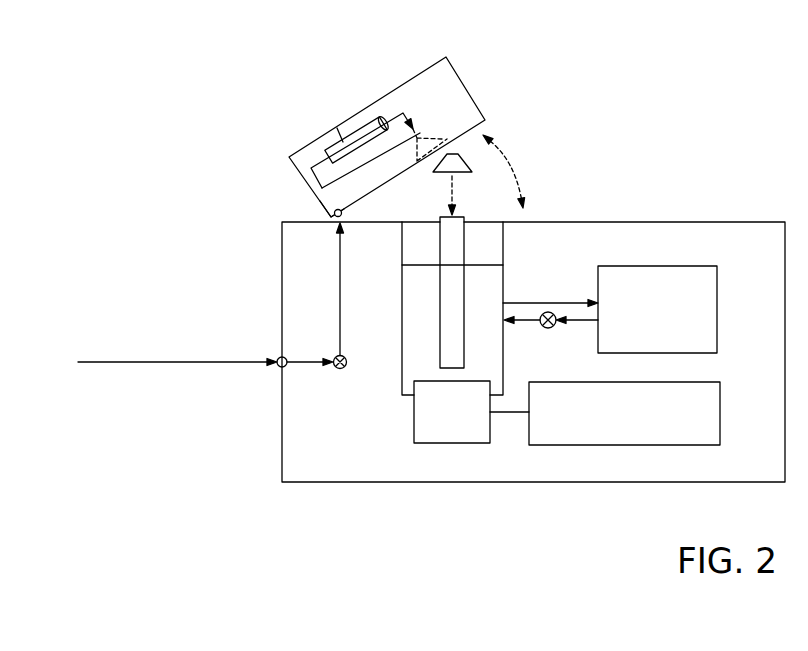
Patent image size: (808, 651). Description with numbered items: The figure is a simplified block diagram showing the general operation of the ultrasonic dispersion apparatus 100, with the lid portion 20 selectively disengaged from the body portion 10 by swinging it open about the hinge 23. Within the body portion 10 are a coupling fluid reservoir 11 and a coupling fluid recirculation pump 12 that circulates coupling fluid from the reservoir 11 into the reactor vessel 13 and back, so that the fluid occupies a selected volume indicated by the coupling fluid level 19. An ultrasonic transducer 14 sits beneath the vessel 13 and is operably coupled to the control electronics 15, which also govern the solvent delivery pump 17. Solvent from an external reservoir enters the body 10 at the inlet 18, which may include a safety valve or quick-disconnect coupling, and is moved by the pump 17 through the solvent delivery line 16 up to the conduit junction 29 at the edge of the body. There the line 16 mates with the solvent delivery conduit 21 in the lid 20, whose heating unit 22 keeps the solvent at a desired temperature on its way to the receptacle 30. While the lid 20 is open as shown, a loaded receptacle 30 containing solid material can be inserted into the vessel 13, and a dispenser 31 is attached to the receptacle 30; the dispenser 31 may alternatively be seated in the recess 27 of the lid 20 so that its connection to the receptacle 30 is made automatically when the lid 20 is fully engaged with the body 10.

The ultrasonic dispersion apparatus 100 is at (666, 128).
The body portion 10 is at (677, 222).
The coupling fluid reservoir 11 is at (718, 285).
The coupling fluid recirculation pump 12 is at (551, 328).
The reactor vessel 13 is at (402, 358).
The ultrasonic transducer 14 is at (413, 415).
The control electronics 15 is at (720, 393).
The solvent delivery line 16 is at (340, 318).
The solvent delivery pump 17 is at (334, 369).
The inlet 18 is at (278, 367).
The coupling fluid level 19 is at (402, 265).
The lid portion 20 is at (474, 90).
The solvent delivery conduit 21 is at (322, 186).
The heating unit 22 is at (336, 129).
The hinge 23 is at (326, 218).
The recess 27 is at (432, 139).
The conduit junction 29 is at (344, 215).
The receptacle 30 is at (464, 250).
The dispenser 31 is at (466, 173).